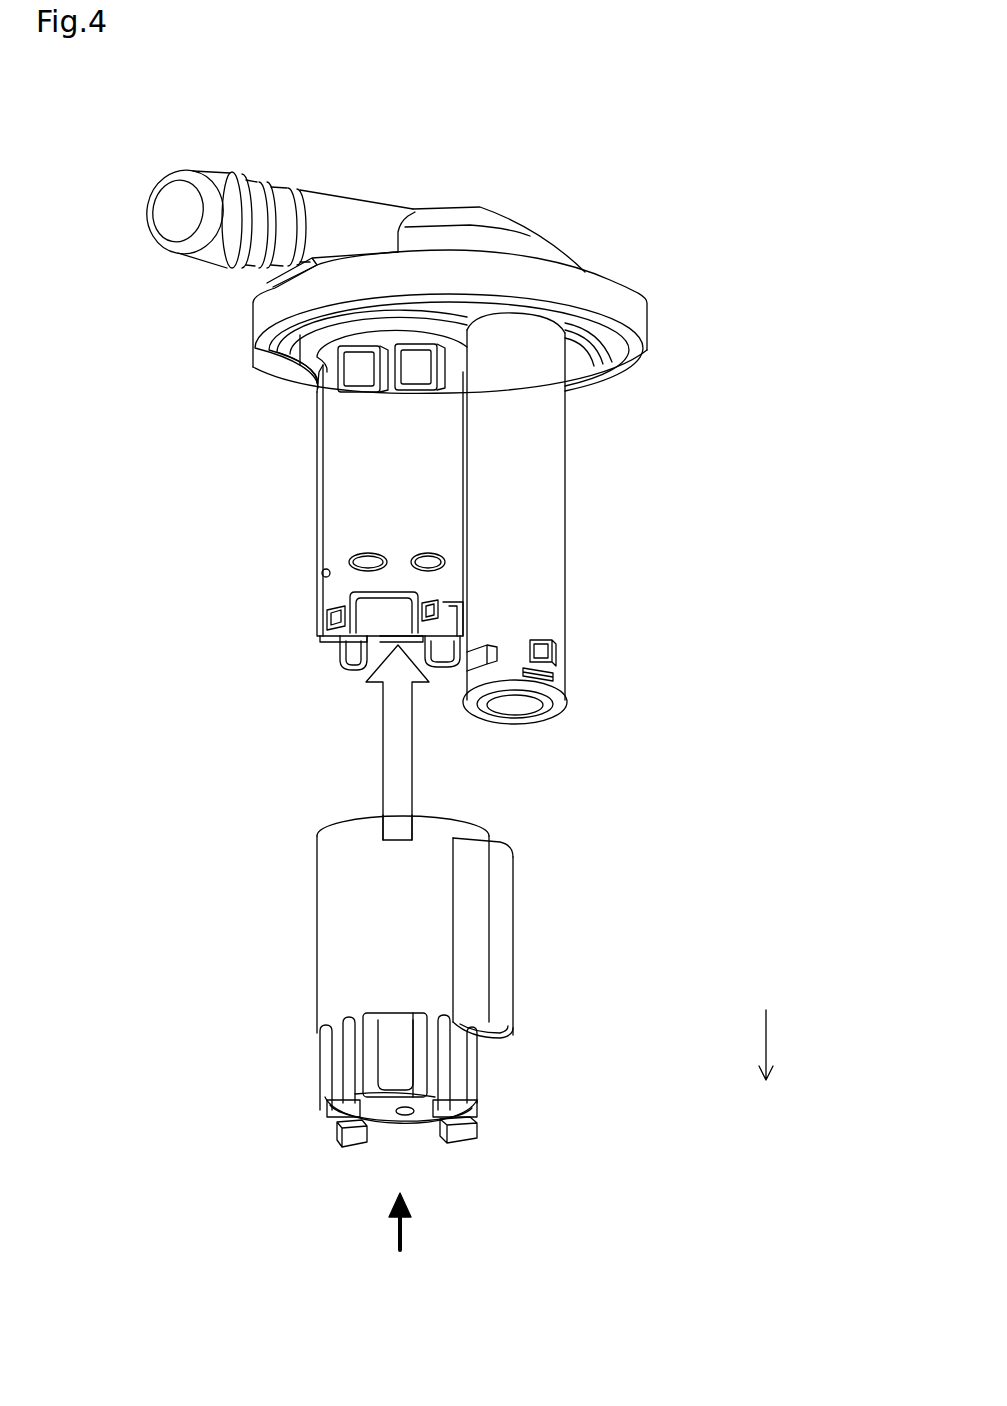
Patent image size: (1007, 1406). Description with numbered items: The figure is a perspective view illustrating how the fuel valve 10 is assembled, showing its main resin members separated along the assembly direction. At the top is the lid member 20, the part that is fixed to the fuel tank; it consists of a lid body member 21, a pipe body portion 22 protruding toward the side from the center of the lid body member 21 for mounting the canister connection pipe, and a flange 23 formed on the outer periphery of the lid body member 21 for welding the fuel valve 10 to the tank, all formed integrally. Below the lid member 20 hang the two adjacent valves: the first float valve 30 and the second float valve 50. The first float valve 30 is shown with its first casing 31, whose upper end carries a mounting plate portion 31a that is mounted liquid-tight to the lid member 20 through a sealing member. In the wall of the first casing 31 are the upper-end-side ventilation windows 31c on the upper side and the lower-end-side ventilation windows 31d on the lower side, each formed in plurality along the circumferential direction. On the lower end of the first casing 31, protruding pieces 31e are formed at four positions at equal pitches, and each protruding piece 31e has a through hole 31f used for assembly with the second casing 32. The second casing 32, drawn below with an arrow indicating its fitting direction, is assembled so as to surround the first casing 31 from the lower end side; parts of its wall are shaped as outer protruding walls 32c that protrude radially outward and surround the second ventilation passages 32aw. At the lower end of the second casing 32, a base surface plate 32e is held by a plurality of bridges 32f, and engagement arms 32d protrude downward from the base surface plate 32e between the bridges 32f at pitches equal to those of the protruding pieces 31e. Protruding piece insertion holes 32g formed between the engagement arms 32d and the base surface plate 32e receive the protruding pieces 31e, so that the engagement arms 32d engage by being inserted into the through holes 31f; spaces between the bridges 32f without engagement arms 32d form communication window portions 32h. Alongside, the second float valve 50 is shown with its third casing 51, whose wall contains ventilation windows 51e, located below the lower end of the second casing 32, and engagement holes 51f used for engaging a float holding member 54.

The fuel valve 10 is at (733, 128).
The lid member 20 is at (490, 56).
The lid body member 21 is at (343, 207).
The pipe body portion 22 is at (250, 180).
The flange 23 is at (583, 277).
The first float valve 30 is at (196, 681).
The first casing 31 is at (325, 458).
The mounting plate portion 31a is at (300, 335).
The upper-end-side ventilation windows 31c is at (430, 384).
The lower-end-side ventilation windows 31d is at (418, 550).
The protruding pieces 31e is at (428, 634).
The through holes 31f is at (340, 615).
The second casing 32 is at (357, 925).
The second ventilation passages 32aw is at (498, 1040).
The outer protruding walls 32c is at (485, 975).
The engagement arms 32d is at (352, 1142).
The base surface plate 32e is at (399, 1122).
The bridges 32f is at (435, 1052).
The protruding piece insertion holes 32g is at (355, 1093).
The communication window portions 32h is at (396, 1028).
The second float valve 50 is at (598, 461).
The third casing 51 is at (547, 505).
The ventilation windows 51e is at (483, 650).
The engagement holes 51f is at (555, 674).
The float holding members 54 is at (550, 683).